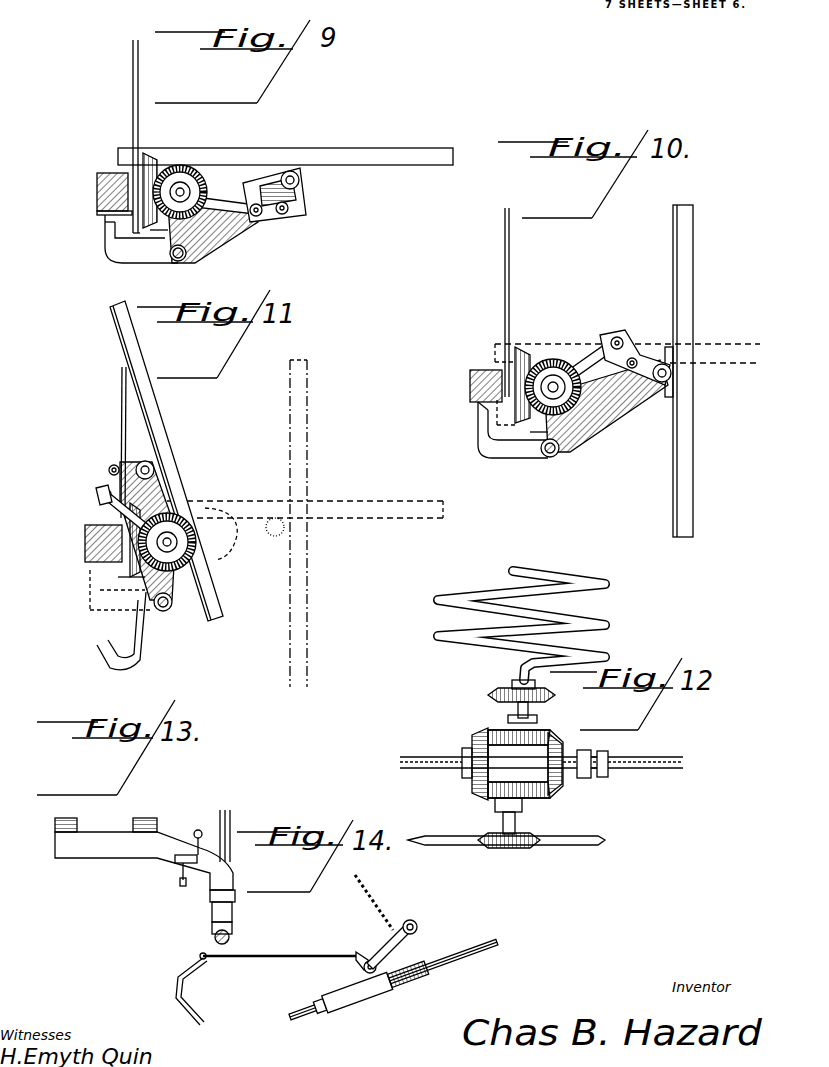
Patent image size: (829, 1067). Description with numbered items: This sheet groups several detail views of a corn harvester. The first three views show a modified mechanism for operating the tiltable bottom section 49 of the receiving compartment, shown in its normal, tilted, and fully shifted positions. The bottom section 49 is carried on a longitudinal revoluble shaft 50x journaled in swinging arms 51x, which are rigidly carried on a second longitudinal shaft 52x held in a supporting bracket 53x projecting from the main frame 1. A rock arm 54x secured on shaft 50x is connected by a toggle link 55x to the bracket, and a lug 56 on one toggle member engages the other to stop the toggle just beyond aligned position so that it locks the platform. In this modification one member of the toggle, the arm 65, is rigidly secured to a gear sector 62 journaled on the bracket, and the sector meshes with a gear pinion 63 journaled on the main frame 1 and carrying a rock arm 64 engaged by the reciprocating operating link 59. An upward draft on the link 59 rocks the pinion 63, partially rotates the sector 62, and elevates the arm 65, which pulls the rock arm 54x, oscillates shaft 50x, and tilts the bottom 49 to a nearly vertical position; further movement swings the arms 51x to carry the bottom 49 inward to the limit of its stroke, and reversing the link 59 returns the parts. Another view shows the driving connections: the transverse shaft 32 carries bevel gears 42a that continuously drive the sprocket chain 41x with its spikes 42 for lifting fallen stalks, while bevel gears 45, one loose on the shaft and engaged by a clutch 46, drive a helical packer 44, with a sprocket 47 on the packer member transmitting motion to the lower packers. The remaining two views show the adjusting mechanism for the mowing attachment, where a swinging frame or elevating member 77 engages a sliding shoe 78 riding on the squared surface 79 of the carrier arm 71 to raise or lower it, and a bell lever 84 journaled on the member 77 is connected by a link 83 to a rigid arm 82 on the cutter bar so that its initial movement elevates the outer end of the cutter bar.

In FIG. 9, the main frame 1 is at (95, 194).
In FIG. 10, the main frame 1 is at (468, 385).
In FIG. 11, the main frame 1 is at (83, 540).
In FIG. 9, the movable bottom section 49 is at (325, 157).
In FIG. 10, the movable bottom section 49 is at (693, 300).
In FIG. 11, the movable bottom section 49 is at (168, 438).
In FIG. 9, the operating link 59 is at (139, 92).
In FIG. 10, the operating link 59 is at (505, 312).
In FIG. 11, the operating link 59 is at (120, 436).
In FIG. 9, the gear sector 62 is at (190, 180).
In FIG. 10, the gear sector 62 is at (557, 357).
In FIG. 11, the gear sector 62 is at (182, 548).
In FIG. 9, the gear pinion 63 is at (140, 215).
In FIG. 10, the gear pinion 63 is at (522, 350).
In FIG. 11, the gear pinion 63 is at (125, 560).
In FIG. 9, the rock arm 64 is at (130, 226).
In FIG. 10, the rock arm 64 is at (498, 412).
In FIG. 11, the rock arm 64 is at (90, 553).
In FIG. 9, the arm 65 is at (224, 202).
In FIG. 10, the arm 65 is at (585, 370).
In FIG. 11, the arm 65 is at (112, 506).
In FIG. 9, the lug 56 is at (258, 206).
In FIG. 10, the lug 56 is at (620, 340).
In FIG. 11, the lug 56 is at (102, 496).
In FIG. 9, the longitudinal revoluble shaft 50x is at (300, 181).
In FIG. 10, the longitudinal revoluble shaft 50x is at (675, 378).
In FIG. 11, the longitudinal revoluble shaft 50x is at (156, 470).
In FIG. 9, the swinging arms 51x is at (212, 240).
In FIG. 10, the swinging arms 51x is at (598, 420).
In FIG. 11, the swinging arms 51x is at (150, 500).
In FIG. 9, the second longitudinal shaft 52x is at (185, 259).
In FIG. 10, the second longitudinal shaft 52x is at (560, 455).
In FIG. 11, the second longitudinal shaft 52x is at (170, 610).
In FIG. 9, the supporting bracket 53x is at (166, 230).
In FIG. 10, the supporting bracket 53x is at (540, 434).
In FIG. 11, the supporting bracket 53x is at (120, 577).
In FIG. 9, the rock arm 54x is at (289, 209).
In FIG. 10, the rock arm 54x is at (637, 360).
In FIG. 11, the rock arm 54x is at (108, 470).
In FIG. 9, the toggle link 55x is at (258, 216).
In FIG. 10, the toggle link 55x is at (612, 338).
In FIG. 11, the toggle link 55x is at (100, 502).
In FIG. 12, the helical packer 44 is at (542, 625).
In FIG. 12, the sprocket 47 is at (492, 695).
In FIG. 12, the bevel gears 45 is at (560, 734).
In FIG. 12, the transverse shaft 32 is at (541, 750).
In FIG. 12, the bevel gears 42a is at (478, 776).
In FIG. 12, the clutch 46 is at (585, 780).
In FIG. 12, the sprocket chain 41x is at (520, 850).
In FIG. 12, the spikes or fingers 42 is at (580, 847).
In FIG. 13, the swinging frame or elevating member 77 is at (113, 850).
In FIG. 14, the swinging frame or elevating member 77 is at (405, 941).
In FIG. 13, the carrier arm 71 is at (232, 818).
In FIG. 14, the carrier arm 71 is at (470, 962).
In FIG. 13, the bell lever 84 is at (178, 870).
In FIG. 14, the bell lever 84 is at (367, 958).
In FIG. 13, the sliding sleeve or shoe 78 is at (210, 908).
In FIG. 14, the sliding sleeve or shoe 78 is at (375, 988).
In FIG. 13, the polygonal or squared surface 79 is at (234, 926).
In FIG. 14, the polygonal or squared surface 79 is at (418, 980).
In FIG. 14, the link 83 is at (275, 957).
In FIG. 14, the arm 82 is at (177, 981).